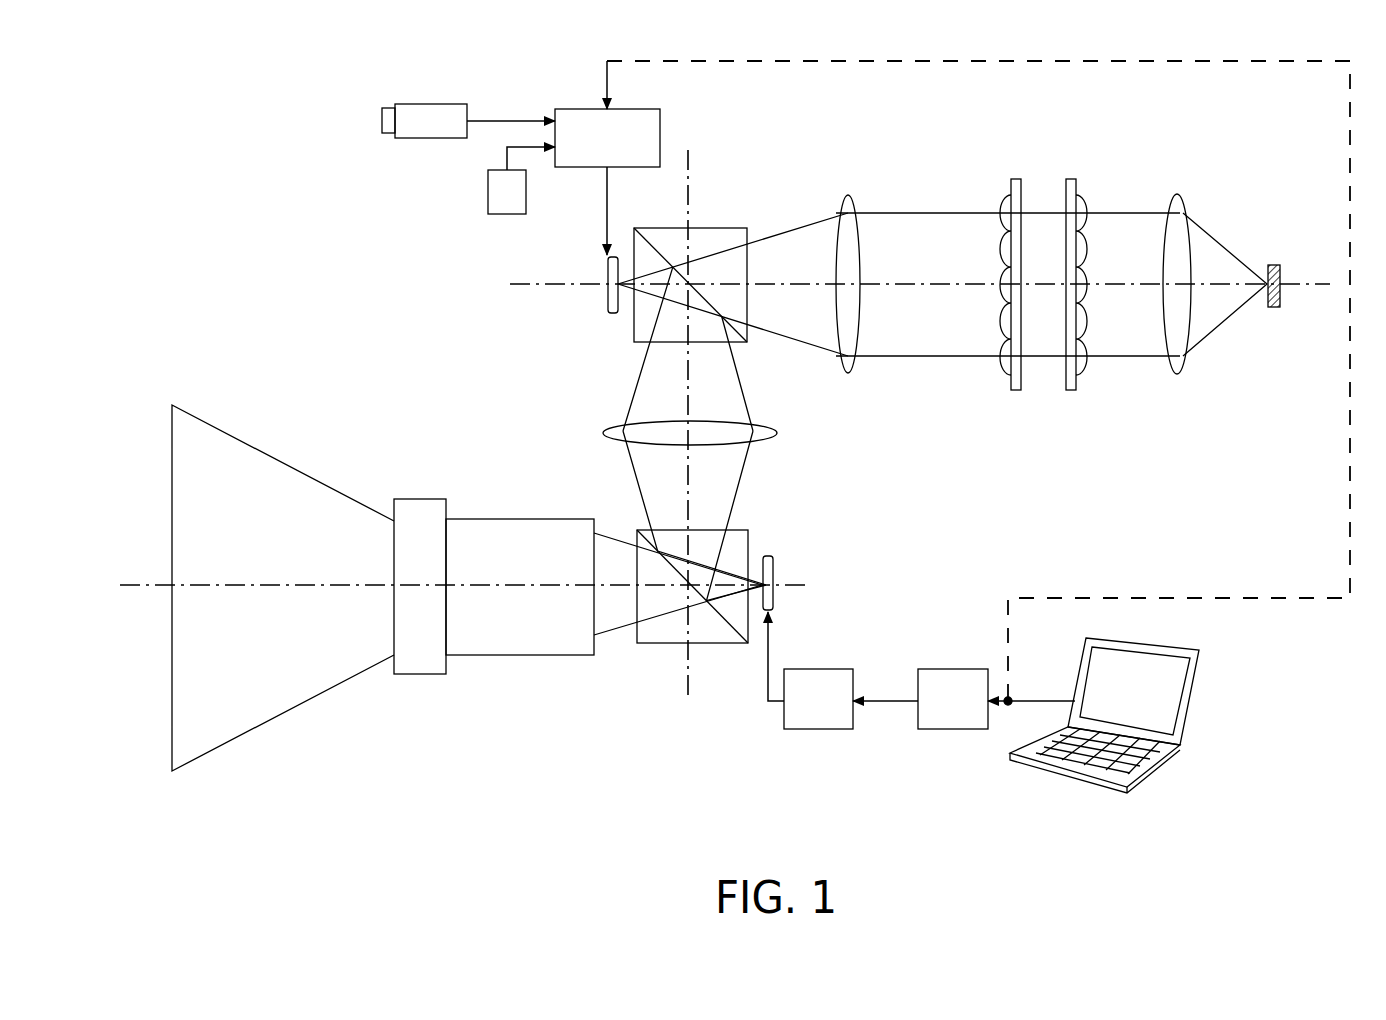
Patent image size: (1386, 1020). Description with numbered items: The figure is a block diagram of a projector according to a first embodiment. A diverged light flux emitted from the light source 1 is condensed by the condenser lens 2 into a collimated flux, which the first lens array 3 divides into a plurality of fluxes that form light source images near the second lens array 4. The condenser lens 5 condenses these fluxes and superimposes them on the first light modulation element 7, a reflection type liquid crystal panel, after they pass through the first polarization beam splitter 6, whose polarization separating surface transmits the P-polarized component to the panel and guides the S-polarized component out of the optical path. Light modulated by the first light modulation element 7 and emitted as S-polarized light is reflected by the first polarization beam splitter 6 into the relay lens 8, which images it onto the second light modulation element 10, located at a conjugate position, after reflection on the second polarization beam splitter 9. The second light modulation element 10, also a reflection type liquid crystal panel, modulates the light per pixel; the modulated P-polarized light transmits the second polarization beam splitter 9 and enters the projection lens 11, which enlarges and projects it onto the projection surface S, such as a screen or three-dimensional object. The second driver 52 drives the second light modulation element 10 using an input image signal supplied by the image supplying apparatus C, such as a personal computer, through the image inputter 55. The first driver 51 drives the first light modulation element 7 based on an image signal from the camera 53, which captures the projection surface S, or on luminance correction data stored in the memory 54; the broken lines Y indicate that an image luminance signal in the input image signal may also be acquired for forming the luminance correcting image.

The light source 1 is at (1270, 307).
The condenser lens 2 is at (1178, 375).
The first lens array 3 is at (1071, 390).
The second lens array 4 is at (1014, 390).
The condenser lens 5 is at (848, 373).
The first polarization beam splitter 6 is at (738, 228).
The first light modulation element 7 is at (608, 257).
The relay lens 8 is at (603, 433).
The second polarization beam splitter 9 is at (670, 643).
The second light modulation element 10 is at (773, 608).
The projection lens 11 is at (528, 655).
The first driver 51 is at (660, 132).
The second driver 52 is at (828, 729).
The camera 53 is at (428, 104).
The memory 54 is at (488, 192).
The image inputter 55 is at (950, 729).
The image supplying apparatus C is at (1102, 785).
The projection surface S is at (172, 752).
The optical unit Y is at (918, 61).